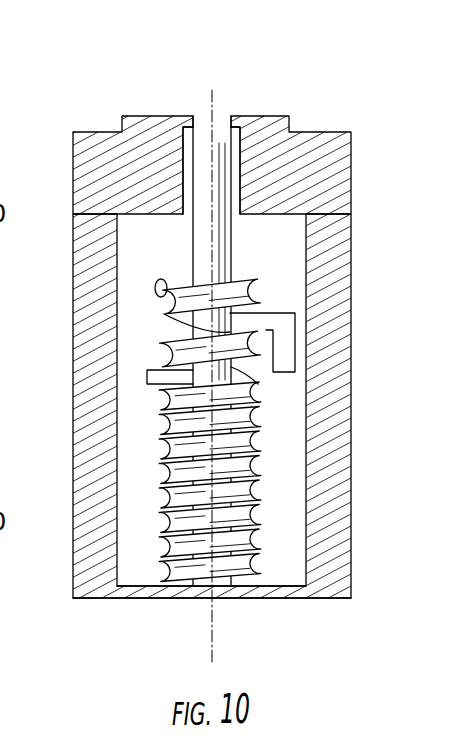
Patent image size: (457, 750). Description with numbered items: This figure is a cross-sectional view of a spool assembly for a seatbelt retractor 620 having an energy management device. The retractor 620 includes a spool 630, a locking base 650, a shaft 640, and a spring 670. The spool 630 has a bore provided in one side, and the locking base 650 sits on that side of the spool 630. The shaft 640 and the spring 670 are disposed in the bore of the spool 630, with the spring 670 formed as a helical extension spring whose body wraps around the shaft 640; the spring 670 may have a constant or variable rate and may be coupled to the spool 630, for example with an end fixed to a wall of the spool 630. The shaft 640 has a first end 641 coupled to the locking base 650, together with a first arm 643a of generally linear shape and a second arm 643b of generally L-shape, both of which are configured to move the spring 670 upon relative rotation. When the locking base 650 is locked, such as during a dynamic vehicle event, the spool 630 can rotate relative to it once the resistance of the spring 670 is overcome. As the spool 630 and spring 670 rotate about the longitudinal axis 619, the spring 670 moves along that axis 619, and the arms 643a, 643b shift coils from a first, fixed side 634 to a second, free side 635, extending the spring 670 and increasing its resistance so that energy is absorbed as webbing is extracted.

The longitudinal axis 619 is at (210, 648).
The retractor 620 is at (212, 72).
The spool 630 is at (335, 477).
The first side 634 is at (135, 343).
The second side 635 is at (138, 517).
The shaft 640 is at (200, 250).
The first end 641 is at (205, 140).
The first arm 643a is at (148, 380).
The second arm 643b is at (287, 358).
The locking base 650 is at (268, 130).
The spring 670 is at (150, 574).